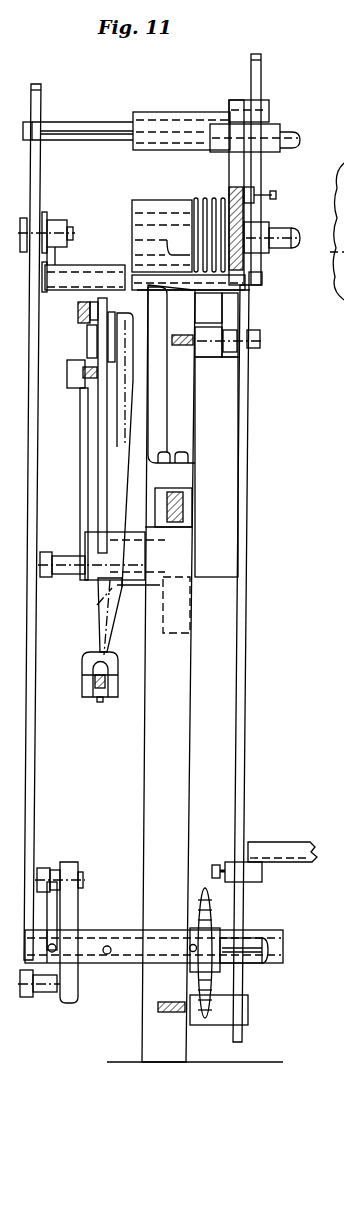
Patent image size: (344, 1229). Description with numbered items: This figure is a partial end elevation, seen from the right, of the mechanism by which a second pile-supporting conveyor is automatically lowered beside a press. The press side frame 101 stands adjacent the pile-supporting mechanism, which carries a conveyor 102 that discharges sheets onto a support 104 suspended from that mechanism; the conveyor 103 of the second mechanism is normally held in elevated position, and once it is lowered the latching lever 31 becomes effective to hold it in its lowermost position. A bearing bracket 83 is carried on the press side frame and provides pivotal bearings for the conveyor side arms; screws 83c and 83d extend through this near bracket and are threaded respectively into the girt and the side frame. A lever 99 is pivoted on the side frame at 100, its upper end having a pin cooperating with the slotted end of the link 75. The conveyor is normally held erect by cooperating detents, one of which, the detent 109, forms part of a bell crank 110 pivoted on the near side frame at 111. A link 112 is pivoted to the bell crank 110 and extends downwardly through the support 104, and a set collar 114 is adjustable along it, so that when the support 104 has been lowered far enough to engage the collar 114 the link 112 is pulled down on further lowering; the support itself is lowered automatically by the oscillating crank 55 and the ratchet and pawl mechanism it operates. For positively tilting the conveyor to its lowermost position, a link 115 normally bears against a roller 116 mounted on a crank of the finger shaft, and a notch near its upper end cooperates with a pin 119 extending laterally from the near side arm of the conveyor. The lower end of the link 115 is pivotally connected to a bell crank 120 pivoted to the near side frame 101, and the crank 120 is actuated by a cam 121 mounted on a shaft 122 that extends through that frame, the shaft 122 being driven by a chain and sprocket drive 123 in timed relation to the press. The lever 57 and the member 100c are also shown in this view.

The latching lever 31 is at (262, 168).
The oscillating crank 55 is at (88, 349).
The lever arm 57 is at (113, 608).
The link 75 is at (78, 328).
The bearing bracket 83 is at (145, 408).
The screw 83c is at (180, 455).
The screw 83d is at (96, 606).
The lever 99 is at (100, 485).
The pivot 100 is at (75, 548).
The adjacent member 100c is at (321, 277).
The press side frame 101 is at (150, 795).
The conveyor 102 is at (239, 240).
The conveyor 103 is at (229, 168).
The support 104 is at (280, 857).
The detent 109 is at (232, 305).
The bell crank 110 is at (226, 354).
The pivot 111 is at (216, 308).
The link 112 is at (243, 475).
The set collar 114 is at (256, 878).
The link 115 is at (27, 758).
The roller 116 is at (46, 220).
The pin 119 is at (79, 130).
The bell crank 120 is at (54, 872).
The cam 121 is at (70, 906).
The shaft 122 is at (254, 945).
The chain and sprocket drive 123 is at (228, 970).